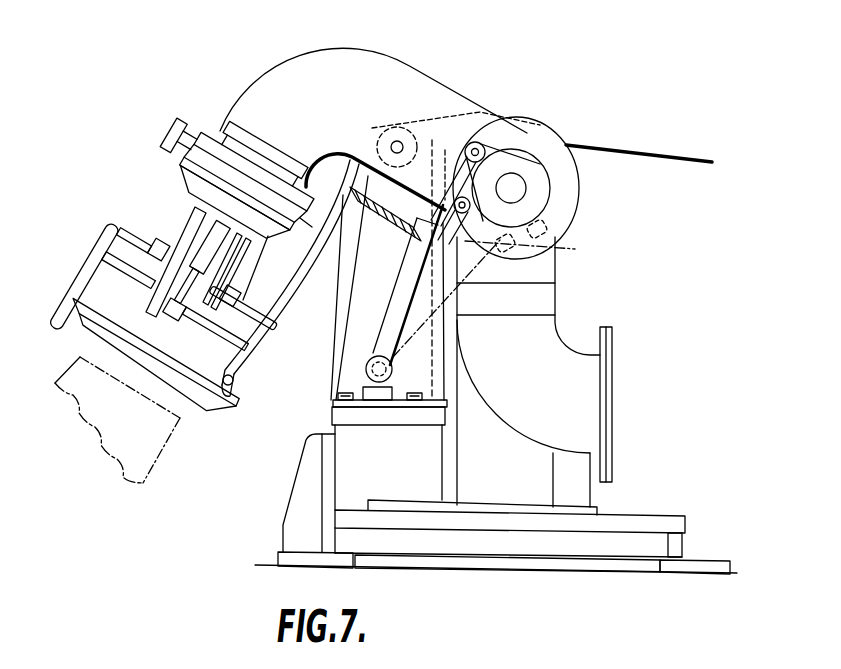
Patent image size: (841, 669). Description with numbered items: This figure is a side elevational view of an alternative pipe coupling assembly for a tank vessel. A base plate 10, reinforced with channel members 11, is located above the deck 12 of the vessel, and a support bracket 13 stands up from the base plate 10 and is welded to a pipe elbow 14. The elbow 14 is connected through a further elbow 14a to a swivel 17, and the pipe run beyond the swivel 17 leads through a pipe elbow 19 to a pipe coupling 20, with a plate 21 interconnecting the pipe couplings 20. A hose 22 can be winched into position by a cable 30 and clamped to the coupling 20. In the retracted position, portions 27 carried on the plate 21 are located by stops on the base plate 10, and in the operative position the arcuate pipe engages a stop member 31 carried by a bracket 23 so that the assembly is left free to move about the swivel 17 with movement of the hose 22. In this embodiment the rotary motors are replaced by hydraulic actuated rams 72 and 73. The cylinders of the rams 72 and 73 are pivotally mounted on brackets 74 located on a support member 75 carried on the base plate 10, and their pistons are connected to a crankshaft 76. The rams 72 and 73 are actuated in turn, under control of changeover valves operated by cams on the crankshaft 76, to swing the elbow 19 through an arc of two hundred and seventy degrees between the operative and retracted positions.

The base plate 10 is at (632, 515).
The channel members 11 is at (302, 487).
The deck 12 is at (637, 568).
The support bracket 13 is at (497, 472).
The pipe elbow 14 is at (534, 372).
The elbow 14a is at (545, 270).
The swivel 17 is at (534, 113).
The pipe elbow 19 is at (356, 61).
The pipe coupling 20 is at (181, 226).
The plate 21 is at (312, 227).
The hose 22 is at (162, 458).
The bracket 23 is at (384, 296).
The portions 27 is at (164, 136).
The cable 30 is at (297, 277).
The stop member 31 is at (397, 223).
The hydraulic actuated ram 72 is at (393, 322).
The hydraulic actuated ram 73 is at (543, 234).
The bracket 74 is at (392, 387).
The support member 75 is at (380, 472).
The crankshaft 76 is at (518, 190).